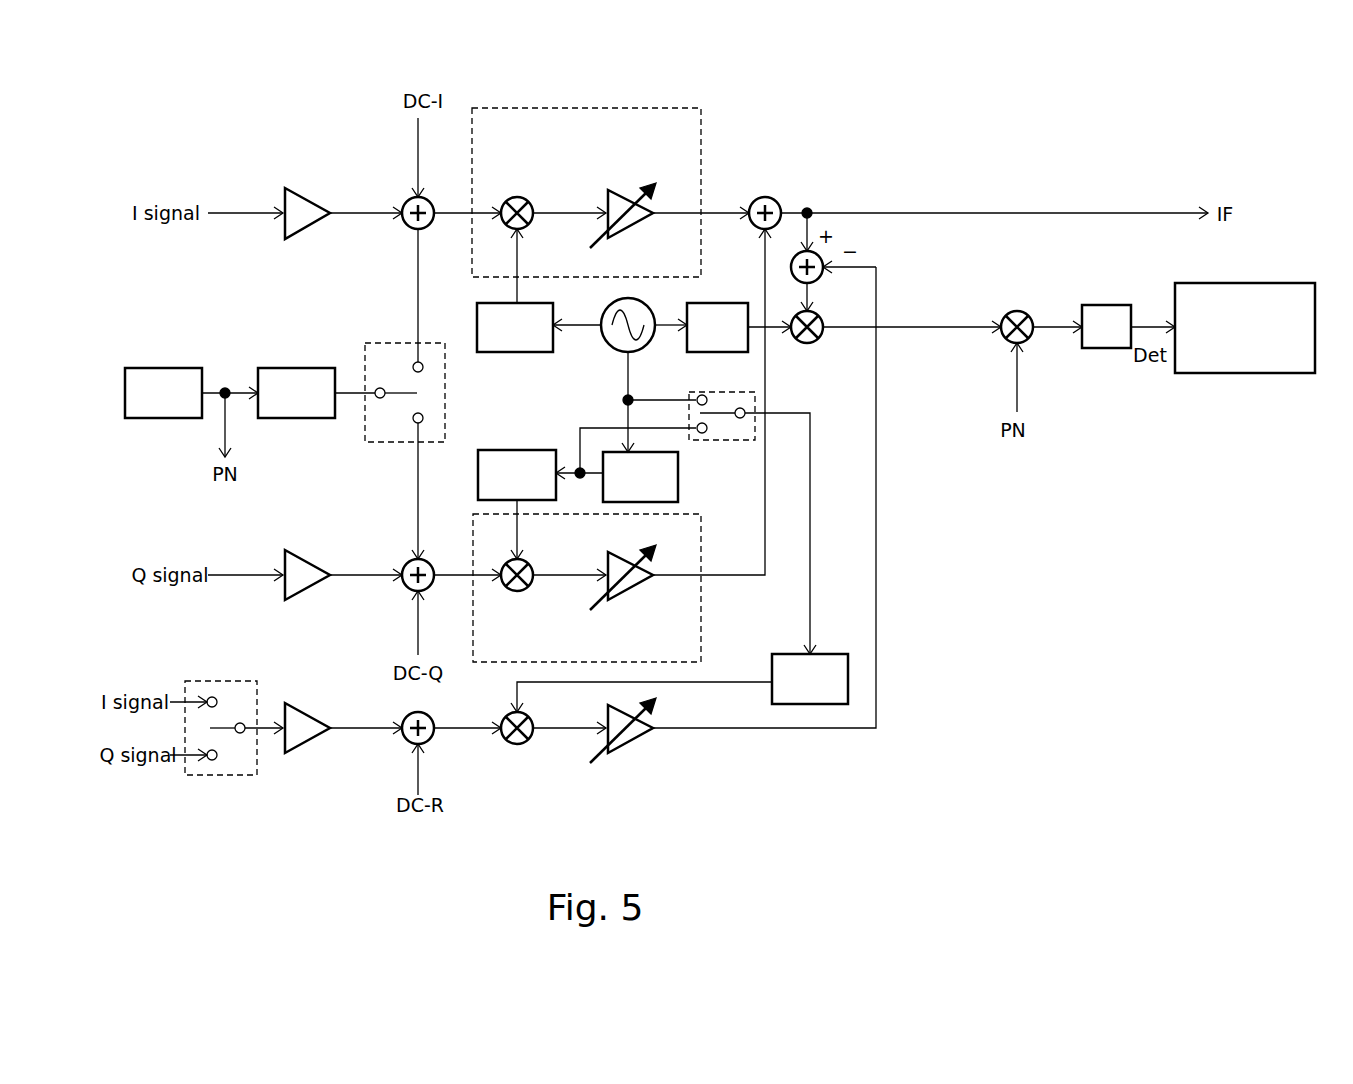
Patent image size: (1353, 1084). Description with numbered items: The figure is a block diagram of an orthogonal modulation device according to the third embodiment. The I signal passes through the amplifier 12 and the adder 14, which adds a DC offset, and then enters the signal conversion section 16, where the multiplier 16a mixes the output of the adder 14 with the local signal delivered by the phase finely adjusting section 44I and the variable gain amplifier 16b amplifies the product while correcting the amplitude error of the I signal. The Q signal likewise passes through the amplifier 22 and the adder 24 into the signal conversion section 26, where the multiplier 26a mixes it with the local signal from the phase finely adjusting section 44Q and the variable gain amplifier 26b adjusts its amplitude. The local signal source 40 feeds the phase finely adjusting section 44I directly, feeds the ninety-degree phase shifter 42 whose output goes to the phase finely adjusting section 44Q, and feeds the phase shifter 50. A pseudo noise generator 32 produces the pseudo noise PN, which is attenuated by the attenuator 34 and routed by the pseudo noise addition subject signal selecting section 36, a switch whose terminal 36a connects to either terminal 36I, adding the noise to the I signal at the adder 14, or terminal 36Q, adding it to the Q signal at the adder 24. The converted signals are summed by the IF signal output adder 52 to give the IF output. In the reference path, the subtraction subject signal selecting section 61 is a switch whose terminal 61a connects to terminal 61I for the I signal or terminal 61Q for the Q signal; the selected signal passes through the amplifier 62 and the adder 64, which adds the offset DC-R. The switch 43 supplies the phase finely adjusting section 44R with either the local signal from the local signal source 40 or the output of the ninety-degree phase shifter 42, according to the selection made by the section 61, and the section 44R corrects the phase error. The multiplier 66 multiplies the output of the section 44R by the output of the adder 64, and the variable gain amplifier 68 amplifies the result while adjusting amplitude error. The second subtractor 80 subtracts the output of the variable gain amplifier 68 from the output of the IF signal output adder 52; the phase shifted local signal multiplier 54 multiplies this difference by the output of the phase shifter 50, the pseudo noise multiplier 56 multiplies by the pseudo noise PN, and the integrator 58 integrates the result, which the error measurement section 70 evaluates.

The amplifier 12 is at (312, 190).
The adder 14 is at (430, 197).
The signal conversion section 16 is at (575, 105).
The multiplier 16a is at (520, 196).
The variable gain amplifier 16b is at (622, 190).
The amplifier 22 is at (310, 600).
The adder 24 is at (430, 591).
The signal conversion section 26 is at (702, 640).
The multiplier 26a is at (520, 592).
The variable gain amplifier 26b is at (632, 600).
The pseudo noise generator 32 is at (165, 368).
The attenuator 34 is at (295, 368).
The pseudo noise addition subject signal selecting section 36 is at (405, 343).
The terminal 36I is at (420, 361).
The terminal 36Q is at (422, 422).
The terminal 36a is at (370, 400).
The local signal source 40 is at (640, 350).
The 90-degree phase shifter 42 is at (678, 487).
The switch 43 is at (718, 440).
The phase finely adjusting section 44I is at (515, 352).
The phase finely adjusting section 44Q is at (520, 450).
The phase finely adjusting section 44R is at (818, 654).
The phase shifter 50 is at (712, 352).
The IF signal output adder 52 is at (768, 196).
The phase shifted local signal multiplier 54 is at (812, 345).
The pseudo noise multiplier 56 is at (1022, 310).
The integrator 58 is at (1105, 305).
The subtraction subject signal selecting section 61 is at (232, 680).
The terminal 61I is at (210, 697).
The terminal 61Q is at (216, 760).
The terminal 61a is at (242, 723).
The amplifier 62 is at (310, 753).
The adder 64 is at (430, 744).
The multiplier 66 is at (520, 744).
The variable gain amplifier 68 is at (632, 753).
The error measurement section 70 is at (1200, 373).
The second subtractor 80 is at (822, 250).